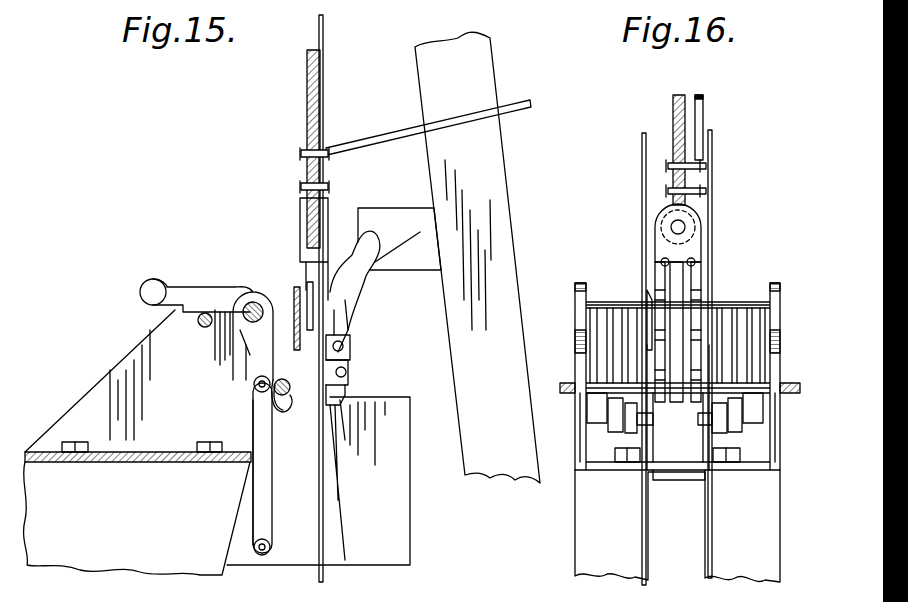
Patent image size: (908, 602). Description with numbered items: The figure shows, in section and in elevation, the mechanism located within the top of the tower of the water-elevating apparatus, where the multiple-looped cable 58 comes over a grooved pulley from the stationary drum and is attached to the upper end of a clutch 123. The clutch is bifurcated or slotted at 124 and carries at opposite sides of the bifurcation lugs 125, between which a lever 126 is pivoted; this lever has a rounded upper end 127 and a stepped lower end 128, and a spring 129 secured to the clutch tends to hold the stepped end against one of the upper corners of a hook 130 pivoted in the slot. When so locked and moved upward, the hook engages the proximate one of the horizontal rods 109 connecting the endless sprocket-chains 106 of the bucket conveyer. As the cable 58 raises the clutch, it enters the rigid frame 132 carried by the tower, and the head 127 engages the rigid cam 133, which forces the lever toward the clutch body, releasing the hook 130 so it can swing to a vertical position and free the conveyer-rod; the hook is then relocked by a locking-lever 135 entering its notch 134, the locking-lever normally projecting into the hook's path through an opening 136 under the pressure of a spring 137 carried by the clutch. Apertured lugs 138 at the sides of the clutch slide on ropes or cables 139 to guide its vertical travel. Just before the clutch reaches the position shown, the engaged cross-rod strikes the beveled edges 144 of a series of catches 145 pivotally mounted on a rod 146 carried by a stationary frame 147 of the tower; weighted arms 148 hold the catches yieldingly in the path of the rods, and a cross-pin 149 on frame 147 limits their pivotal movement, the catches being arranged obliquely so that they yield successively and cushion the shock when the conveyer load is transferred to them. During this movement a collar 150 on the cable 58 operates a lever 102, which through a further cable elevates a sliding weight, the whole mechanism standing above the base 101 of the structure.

In FIG. 15, the multiple-looped cable 58 is at (305, 95).
In FIG. 16, the multiple-looped cable 58 is at (672, 98).
In FIG. 15, the base 101 is at (136, 525).
In FIG. 16, the base 101 is at (659, 526).
In FIG. 15, the lever 102 is at (428, 127).
In FIG. 16, the lever 102 is at (727, 127).
In FIG. 15, the endless sprocket-chains 106 is at (263, 556).
In FIG. 15, the horizontal rods 109 is at (250, 420).
In FIG. 16, the horizontal rods 109 is at (576, 388).
In FIG. 15, the clutch 123 is at (299, 236).
In FIG. 16, the clutch 123 is at (662, 250).
In FIG. 16, the bifurcation 124 is at (670, 278).
In FIG. 15, the lugs 125 is at (350, 345).
In FIG. 16, the lugs 125 is at (702, 345).
In FIG. 15, the lever 126 is at (356, 306).
In FIG. 16, the lever 126 is at (683, 300).
In FIG. 15, the rounded upper end 127 is at (372, 270).
In FIG. 16, the rounded upper end 127 is at (686, 276).
In FIG. 15, the stepped lower end 128 is at (349, 374).
In FIG. 15, the spring 129 is at (410, 210).
In FIG. 15, the hook 130 is at (347, 395).
In FIG. 16, the hook 130 is at (700, 420).
In FIG. 15, the rigid frame 132 is at (296, 300).
In FIG. 15, the rigid cam 133 is at (378, 258).
In FIG. 15, the notch 134 is at (345, 405).
In FIG. 16, the notch 134 is at (682, 402).
In FIG. 15, the locking-lever 135 is at (312, 326).
In FIG. 15, the opening 136 is at (276, 385).
In FIG. 15, the spring 137 is at (308, 298).
In FIG. 15, the apertured lugs 138 is at (332, 420).
In FIG. 16, the apertured lugs 138 is at (697, 426).
In FIG. 15, the ropes or cables 139 is at (325, 578).
In FIG. 16, the ropes or cables 139 is at (641, 146).
In FIG. 15, the beveled edges 144 is at (270, 435).
In FIG. 16, the beveled edges 144 is at (600, 420).
In FIG. 15, the catches 145 is at (296, 300).
In FIG. 16, the catches 145 is at (604, 300).
In FIG. 15, the rod 146 is at (243, 320).
In FIG. 15, the stationary frame 147 is at (100, 381).
In FIG. 16, the stationary frame 147 is at (556, 297).
In FIG. 15, the weighted arms 148 is at (197, 273).
In FIG. 15, the cross-pin 149 is at (198, 320).
In FIG. 15, the collar 150 is at (300, 160).
In FIG. 16, the collar 150 is at (706, 172).